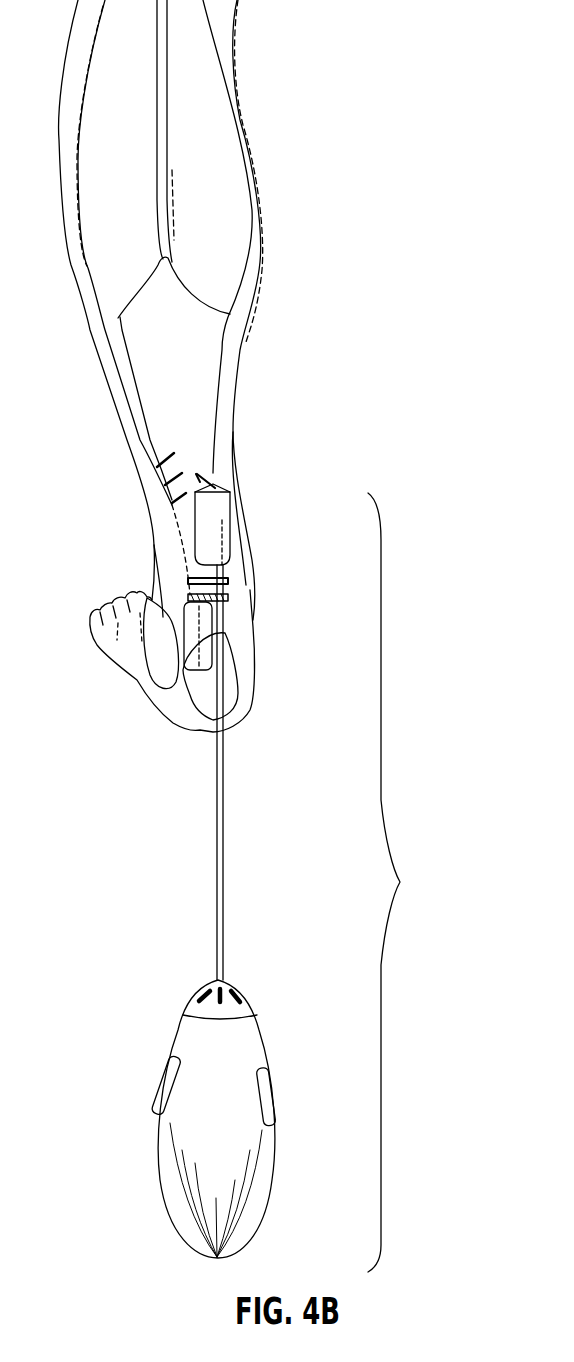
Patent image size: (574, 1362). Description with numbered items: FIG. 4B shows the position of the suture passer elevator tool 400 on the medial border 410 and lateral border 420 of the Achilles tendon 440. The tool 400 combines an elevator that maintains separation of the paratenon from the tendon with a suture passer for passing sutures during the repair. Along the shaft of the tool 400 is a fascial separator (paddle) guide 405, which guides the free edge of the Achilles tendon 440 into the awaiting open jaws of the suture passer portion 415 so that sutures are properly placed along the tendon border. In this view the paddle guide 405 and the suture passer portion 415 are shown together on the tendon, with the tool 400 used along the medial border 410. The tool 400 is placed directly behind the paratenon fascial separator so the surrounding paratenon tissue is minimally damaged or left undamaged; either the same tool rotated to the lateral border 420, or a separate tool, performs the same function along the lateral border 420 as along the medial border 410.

The suture passer elevator tool 400 is at (408, 882).
The fascial separator (paddle) guide 405 is at (228, 490).
The medial border 410 is at (220, 612).
The suture passer portion 415 is at (198, 480).
The lateral border 420 is at (193, 637).
The Achilles tendon 440 is at (183, 342).